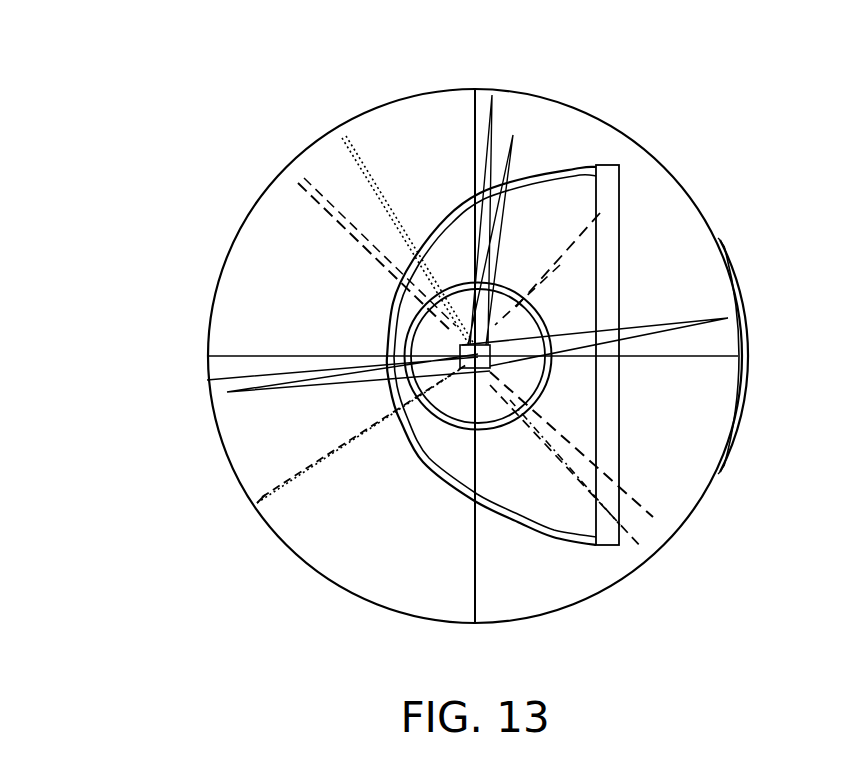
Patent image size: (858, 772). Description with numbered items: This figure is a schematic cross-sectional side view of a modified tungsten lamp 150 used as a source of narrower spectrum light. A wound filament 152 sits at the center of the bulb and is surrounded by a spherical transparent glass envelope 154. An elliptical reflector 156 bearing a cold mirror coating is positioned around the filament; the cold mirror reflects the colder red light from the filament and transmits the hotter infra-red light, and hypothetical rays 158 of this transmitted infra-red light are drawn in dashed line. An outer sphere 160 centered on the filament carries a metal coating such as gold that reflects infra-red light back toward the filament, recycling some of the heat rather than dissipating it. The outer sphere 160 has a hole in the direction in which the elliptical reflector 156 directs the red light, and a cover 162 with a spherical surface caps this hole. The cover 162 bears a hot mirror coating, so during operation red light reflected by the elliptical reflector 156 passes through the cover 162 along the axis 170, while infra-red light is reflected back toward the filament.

The tungsten lamp 150 is at (285, 585).
The wound filament 152 is at (480, 390).
The spherical transparent glass envelope 154 is at (555, 390).
The elliptical reflector 156 is at (573, 172).
The hypothetical rays 158 is at (390, 208).
The outer sphere 160 is at (518, 88).
The cover 162 is at (747, 310).
The axis 170 is at (666, 355).